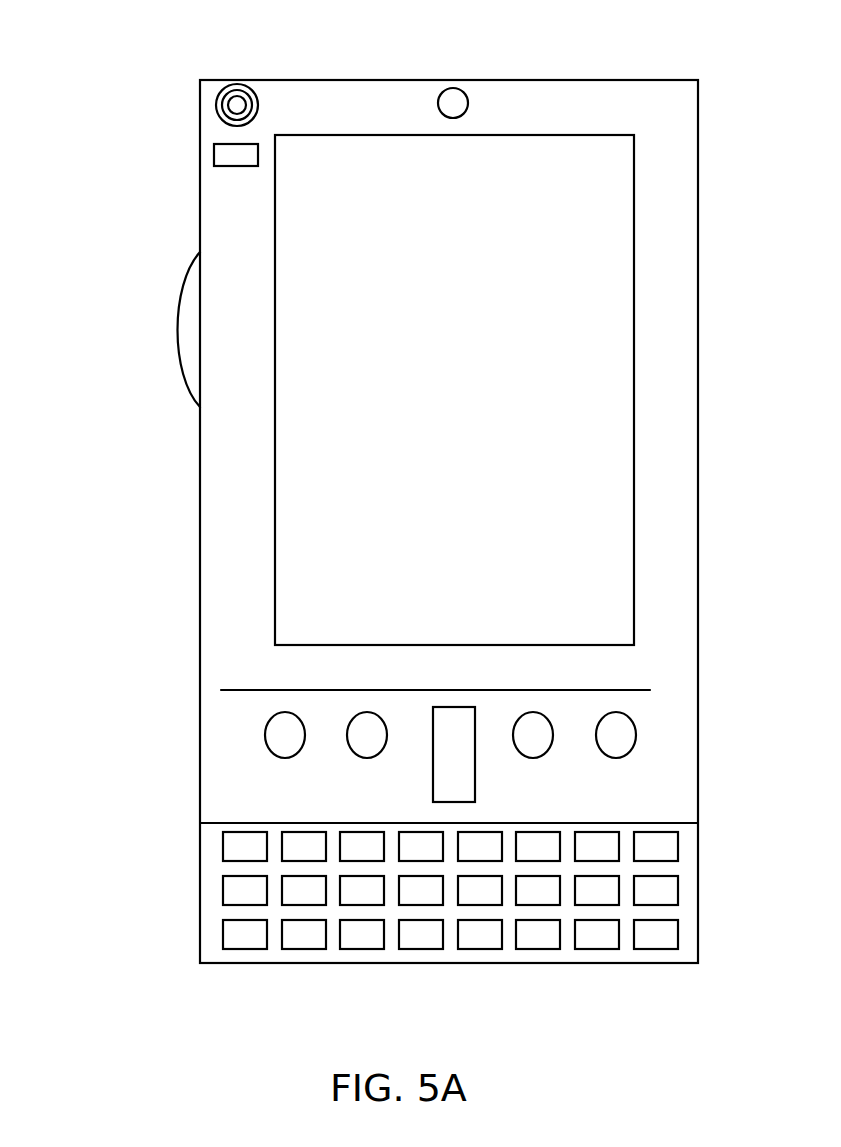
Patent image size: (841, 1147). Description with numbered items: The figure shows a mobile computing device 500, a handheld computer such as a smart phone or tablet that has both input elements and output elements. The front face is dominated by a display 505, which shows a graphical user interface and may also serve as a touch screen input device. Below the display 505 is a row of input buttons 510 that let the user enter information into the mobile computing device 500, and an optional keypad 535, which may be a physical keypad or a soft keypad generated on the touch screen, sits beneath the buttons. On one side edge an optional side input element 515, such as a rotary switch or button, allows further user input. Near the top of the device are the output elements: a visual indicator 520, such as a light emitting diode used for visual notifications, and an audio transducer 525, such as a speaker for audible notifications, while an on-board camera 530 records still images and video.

The mobile computing device 500 is at (685, 98).
The display 505 is at (385, 557).
The input buttons 510 is at (452, 760).
The side input element 515 is at (192, 328).
The visual indicator 520 is at (217, 162).
The audio transducer 525 is at (215, 108).
The on-board camera 530 is at (465, 102).
The keypad 535 is at (210, 938).